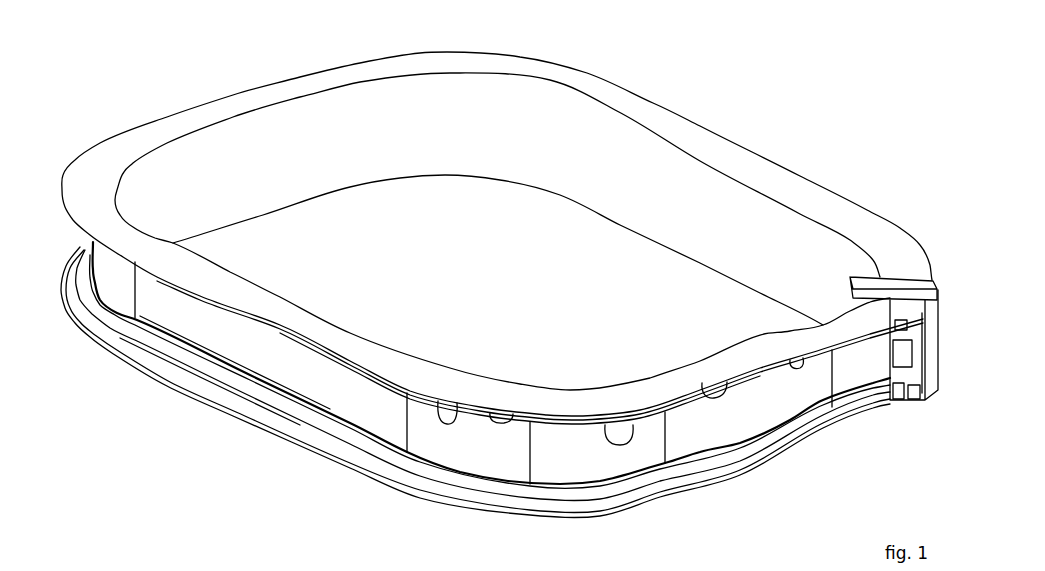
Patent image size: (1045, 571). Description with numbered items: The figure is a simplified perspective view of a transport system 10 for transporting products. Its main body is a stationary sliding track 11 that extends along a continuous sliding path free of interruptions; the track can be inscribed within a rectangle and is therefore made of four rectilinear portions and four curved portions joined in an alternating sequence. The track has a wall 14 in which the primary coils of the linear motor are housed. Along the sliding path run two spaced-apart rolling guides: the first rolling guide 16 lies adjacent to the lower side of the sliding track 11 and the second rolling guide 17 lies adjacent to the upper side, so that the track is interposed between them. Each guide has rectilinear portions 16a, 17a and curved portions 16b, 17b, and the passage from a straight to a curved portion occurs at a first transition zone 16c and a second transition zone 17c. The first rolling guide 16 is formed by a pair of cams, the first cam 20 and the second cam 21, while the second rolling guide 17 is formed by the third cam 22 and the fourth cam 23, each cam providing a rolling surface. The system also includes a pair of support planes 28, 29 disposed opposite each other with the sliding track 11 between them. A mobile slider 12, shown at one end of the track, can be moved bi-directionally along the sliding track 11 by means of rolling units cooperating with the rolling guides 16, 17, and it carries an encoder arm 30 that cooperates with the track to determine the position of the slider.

The transport system 10 is at (698, 60).
The sliding track 11 is at (60, 230).
The mobile slider 12 is at (933, 412).
The wall 14 is at (249, 367).
The first rolling guide 16 is at (475, 401).
The rectilinear portion 16a is at (270, 396).
The curved portion 16b is at (508, 483).
The first transition zone 16c is at (440, 480).
The second rolling guide 17 is at (607, 427).
The rectilinear portion 17a is at (793, 362).
The curved portion 17b is at (512, 418).
The second transition zone 17c is at (458, 407).
The first cam 20 is at (810, 428).
The second cam 21 is at (740, 443).
The third cam 22 is at (702, 391).
The fourth cam 23 is at (570, 422).
The support plane 28 is at (317, 437).
The support plane 29 is at (705, 147).
The encoder arm 30 is at (898, 283).